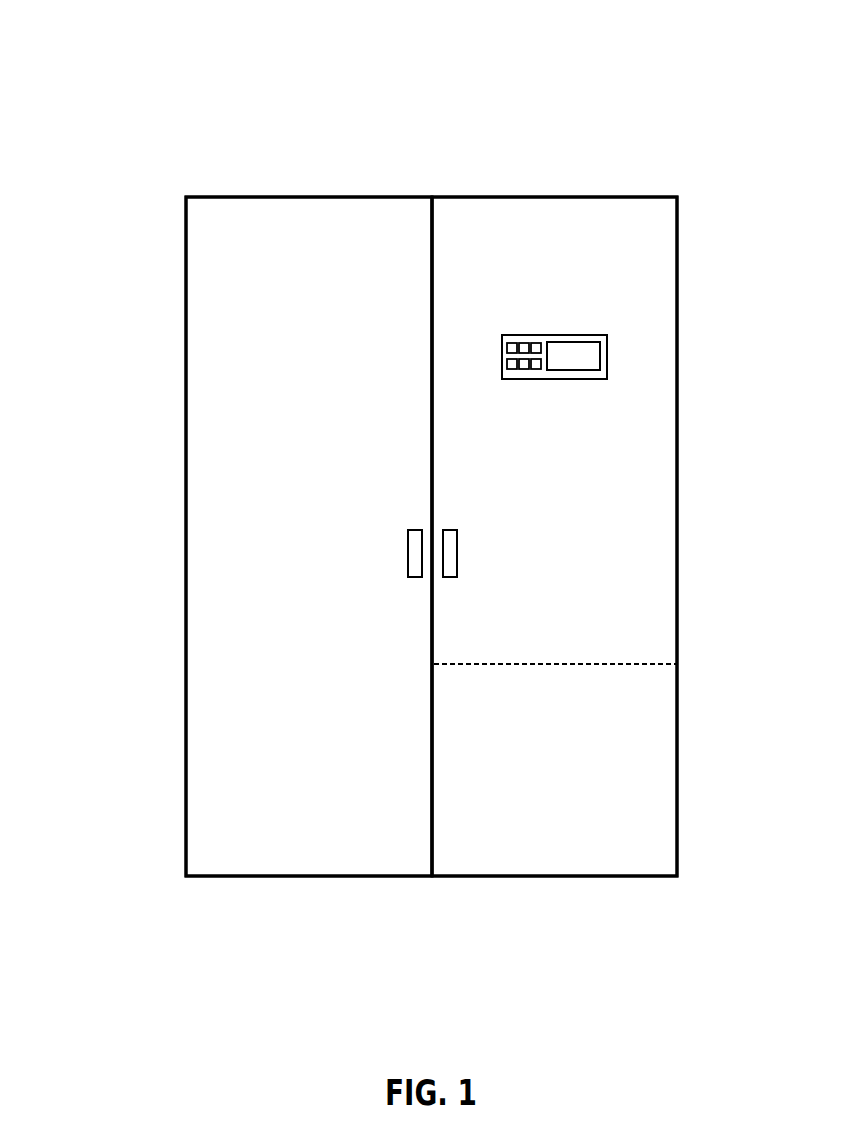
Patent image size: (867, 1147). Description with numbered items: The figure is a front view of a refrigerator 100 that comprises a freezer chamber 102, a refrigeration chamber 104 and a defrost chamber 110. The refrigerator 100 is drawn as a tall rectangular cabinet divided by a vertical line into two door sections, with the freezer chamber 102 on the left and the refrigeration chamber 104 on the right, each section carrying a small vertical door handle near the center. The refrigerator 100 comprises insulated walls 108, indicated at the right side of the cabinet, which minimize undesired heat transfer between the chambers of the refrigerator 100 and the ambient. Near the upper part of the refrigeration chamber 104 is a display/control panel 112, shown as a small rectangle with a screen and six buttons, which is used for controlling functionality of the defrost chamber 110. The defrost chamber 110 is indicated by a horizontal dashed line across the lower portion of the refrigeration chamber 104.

The refrigerator 100 is at (142, 124).
The freezer chamber 102 is at (305, 195).
The refrigeration chamber 104 is at (545, 195).
The insulated walls 108 is at (677, 525).
The defrost chamber 110 is at (632, 663).
The display/control panel 112 is at (572, 335).